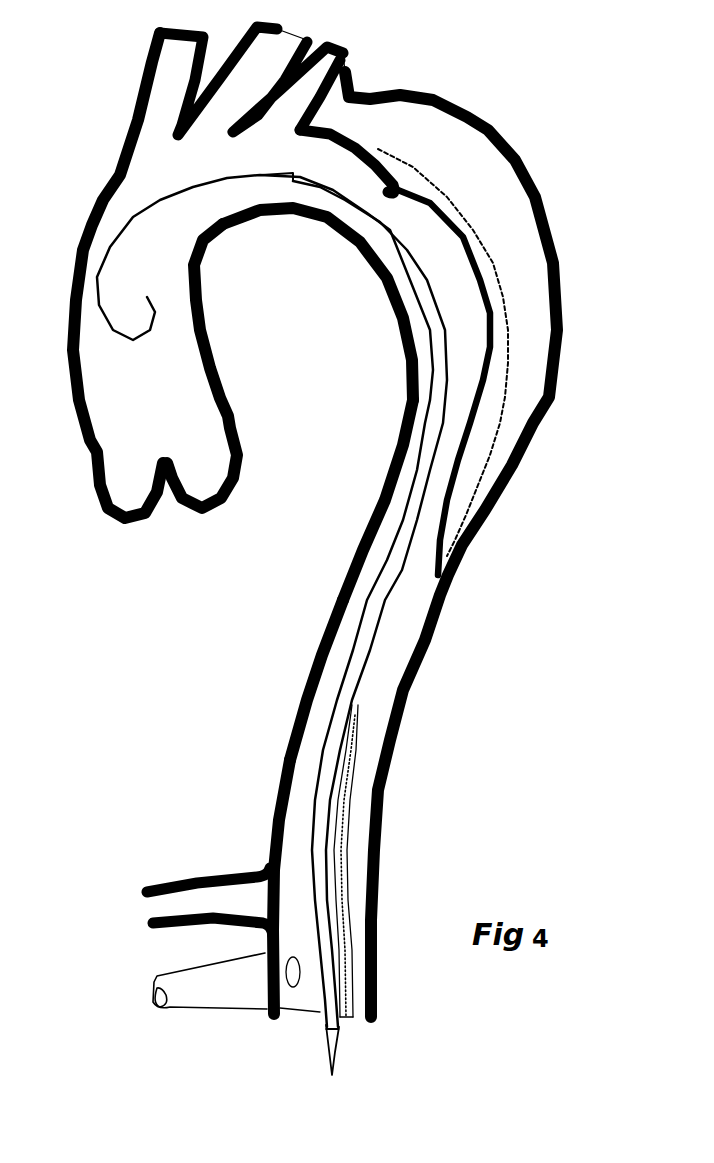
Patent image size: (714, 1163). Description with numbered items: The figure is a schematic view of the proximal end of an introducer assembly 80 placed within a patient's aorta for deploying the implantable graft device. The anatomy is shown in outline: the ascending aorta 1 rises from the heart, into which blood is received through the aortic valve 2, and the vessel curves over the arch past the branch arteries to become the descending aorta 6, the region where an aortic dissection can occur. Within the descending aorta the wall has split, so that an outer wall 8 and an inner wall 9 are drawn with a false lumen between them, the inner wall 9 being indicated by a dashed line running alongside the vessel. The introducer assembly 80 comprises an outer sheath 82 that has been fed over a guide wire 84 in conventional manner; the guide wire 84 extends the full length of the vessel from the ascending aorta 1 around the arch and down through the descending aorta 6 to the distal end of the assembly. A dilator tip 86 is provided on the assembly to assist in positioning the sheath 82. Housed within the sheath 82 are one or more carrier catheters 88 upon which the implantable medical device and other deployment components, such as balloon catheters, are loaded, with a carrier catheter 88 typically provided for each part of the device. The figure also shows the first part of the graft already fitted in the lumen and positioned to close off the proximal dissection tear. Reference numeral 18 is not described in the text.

The ascending aorta 1 is at (123, 363).
The aortic valve 2 is at (163, 467).
The descending aorta 6 is at (320, 627).
The outer wall 8 is at (543, 198).
The inner wall 9 is at (491, 309).
The catheter 18 is at (280, 780).
The introducer assembly 80 is at (385, 530).
The outer sheath 82 is at (345, 202).
The guide wire 84 is at (150, 210).
The dilator tip 86 is at (265, 176).
The carrier catheter 88 is at (339, 1033).